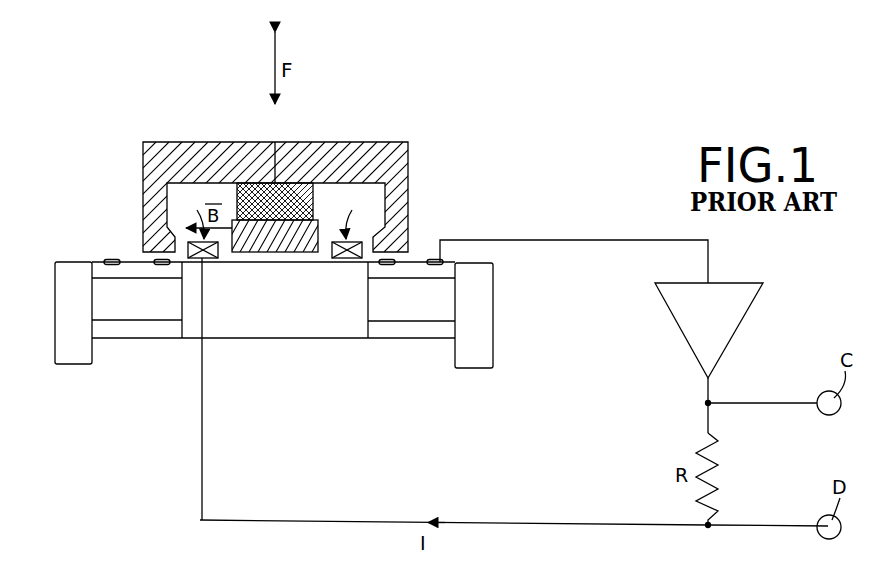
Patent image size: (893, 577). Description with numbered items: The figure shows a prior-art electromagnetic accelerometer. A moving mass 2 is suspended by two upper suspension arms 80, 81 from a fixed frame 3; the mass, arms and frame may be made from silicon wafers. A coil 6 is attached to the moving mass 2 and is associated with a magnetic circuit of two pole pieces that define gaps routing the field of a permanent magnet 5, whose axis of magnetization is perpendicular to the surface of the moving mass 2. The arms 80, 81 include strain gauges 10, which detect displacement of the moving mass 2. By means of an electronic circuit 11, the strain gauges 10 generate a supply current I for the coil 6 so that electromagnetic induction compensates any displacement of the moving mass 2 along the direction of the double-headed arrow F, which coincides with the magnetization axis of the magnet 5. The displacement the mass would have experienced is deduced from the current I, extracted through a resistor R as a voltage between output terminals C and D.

The moving mass 2 is at (310, 323).
The fixed frame 3 is at (483, 310).
The permanent magnet 5 is at (258, 188).
The coil 6 is at (268, 218).
The strain gauges 10 is at (390, 262).
The electronic circuit 11 is at (735, 310).
The suspension arm 80 is at (130, 264).
The suspension arm 81 is at (447, 273).